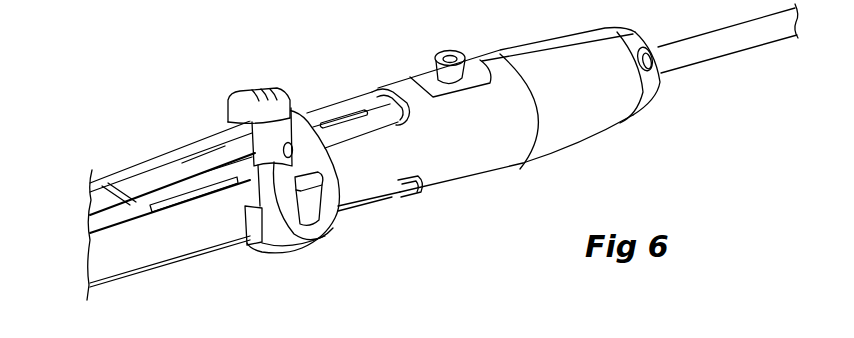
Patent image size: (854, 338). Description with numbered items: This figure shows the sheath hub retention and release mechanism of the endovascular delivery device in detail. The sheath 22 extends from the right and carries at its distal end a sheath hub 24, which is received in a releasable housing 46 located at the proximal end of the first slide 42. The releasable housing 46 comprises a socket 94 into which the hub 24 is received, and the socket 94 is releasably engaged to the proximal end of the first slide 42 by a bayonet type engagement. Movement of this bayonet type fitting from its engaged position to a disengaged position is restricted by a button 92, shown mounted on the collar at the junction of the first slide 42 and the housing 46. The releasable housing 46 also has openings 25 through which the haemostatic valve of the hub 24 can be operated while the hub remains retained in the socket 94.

The sheath 22 is at (713, 45).
The sheath hub 24 is at (346, 128).
The openings 25 is at (396, 199).
The first slide 42 is at (170, 238).
The releasable housing 46 is at (369, 217).
The button 92 is at (246, 91).
The socket 94 is at (481, 155).